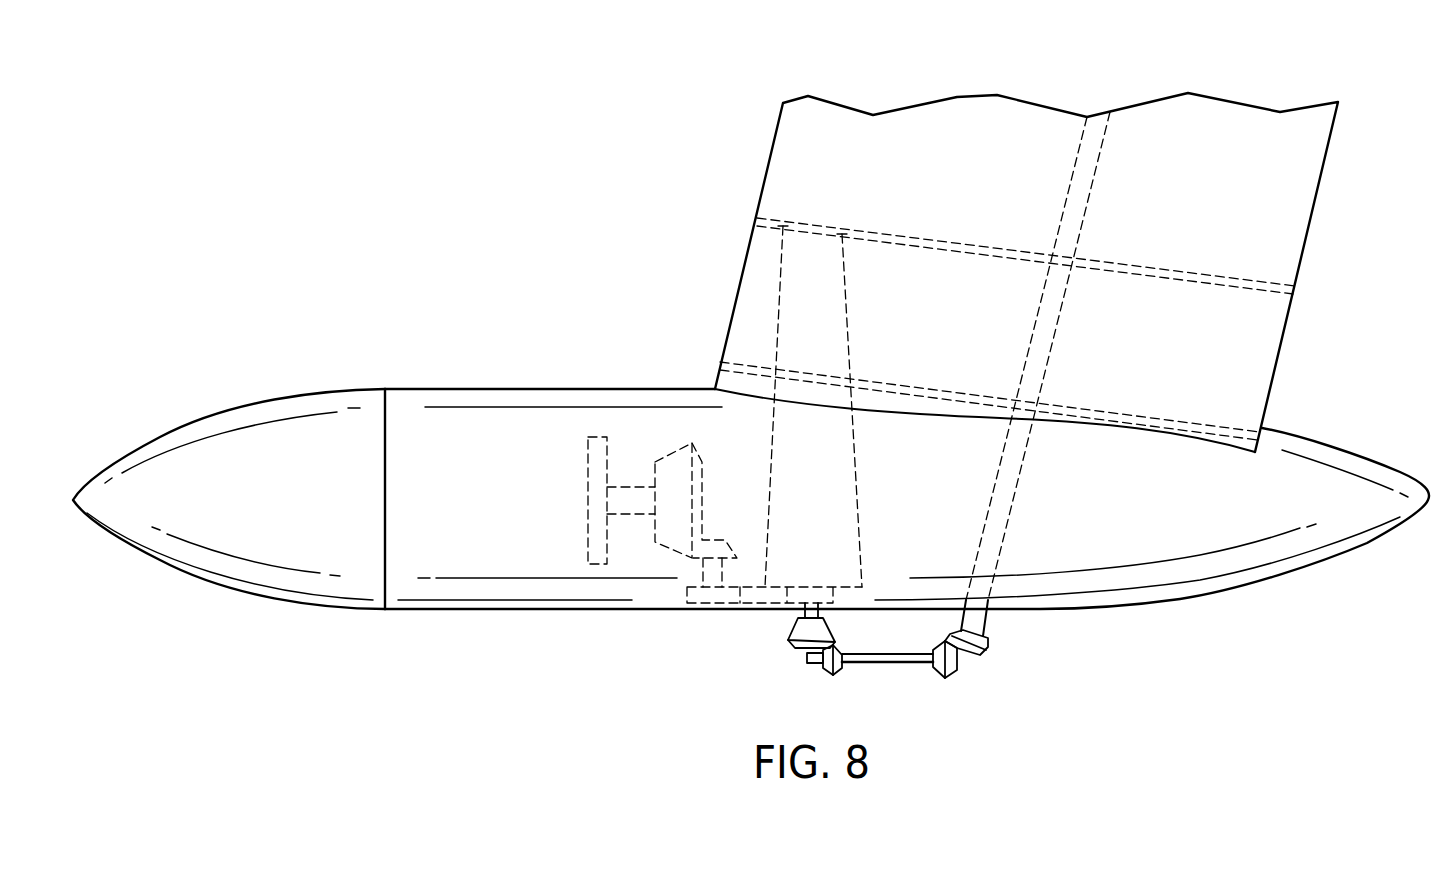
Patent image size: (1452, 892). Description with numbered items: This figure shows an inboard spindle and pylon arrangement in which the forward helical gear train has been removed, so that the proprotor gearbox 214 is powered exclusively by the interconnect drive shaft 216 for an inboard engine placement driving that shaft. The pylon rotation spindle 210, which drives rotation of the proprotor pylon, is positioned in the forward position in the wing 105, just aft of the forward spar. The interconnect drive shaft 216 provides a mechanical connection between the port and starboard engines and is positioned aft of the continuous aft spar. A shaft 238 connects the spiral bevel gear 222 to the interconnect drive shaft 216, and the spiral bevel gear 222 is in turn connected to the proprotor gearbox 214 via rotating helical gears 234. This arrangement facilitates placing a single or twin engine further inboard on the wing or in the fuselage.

The wing 105 is at (1307, 238).
The pylon rotation spindle 210 is at (848, 328).
The proprotor gearbox 214 is at (558, 499).
The interconnect drive shaft 216 is at (1013, 498).
The spiral bevel gear 222 is at (792, 631).
The rotating helical gears 234 is at (686, 598).
The shaft 238 is at (887, 665).